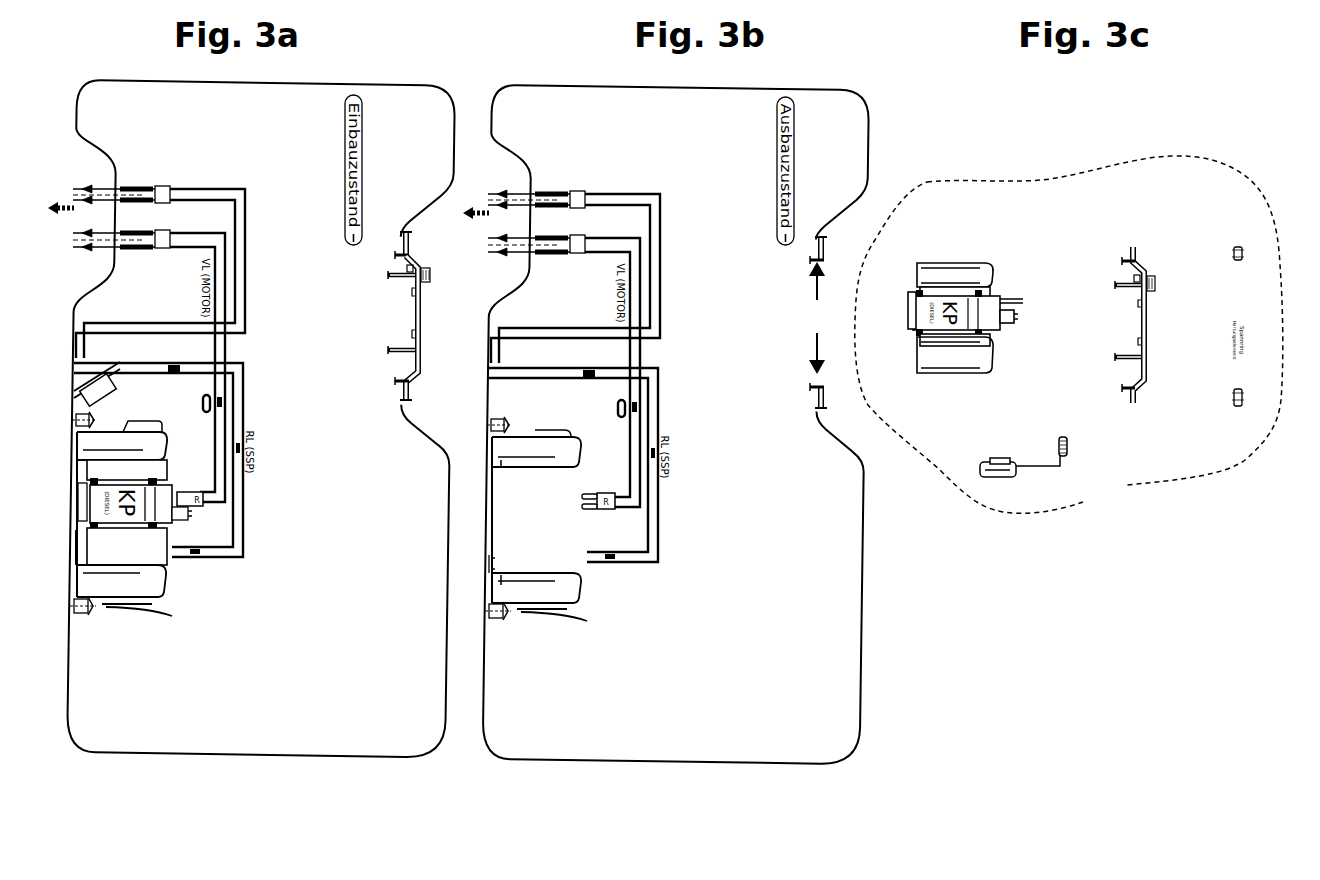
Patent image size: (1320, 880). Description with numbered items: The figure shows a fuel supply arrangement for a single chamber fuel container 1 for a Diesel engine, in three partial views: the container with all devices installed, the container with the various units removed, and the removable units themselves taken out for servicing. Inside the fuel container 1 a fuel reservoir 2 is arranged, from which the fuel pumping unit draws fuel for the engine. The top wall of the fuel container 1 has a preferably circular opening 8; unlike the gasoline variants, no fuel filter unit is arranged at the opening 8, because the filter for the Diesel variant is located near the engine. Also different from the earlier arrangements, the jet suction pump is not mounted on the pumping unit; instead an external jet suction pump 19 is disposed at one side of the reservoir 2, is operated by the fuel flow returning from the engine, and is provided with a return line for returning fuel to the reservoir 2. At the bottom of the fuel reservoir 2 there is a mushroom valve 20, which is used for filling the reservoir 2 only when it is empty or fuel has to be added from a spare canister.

In FIG. 3A, the fuel container 1 is at (248, 753).
In FIG. 3B, the fuel container 1 is at (672, 761).
In FIG. 3A, the fuel reservoir 2 is at (105, 433).
In FIG. 3B, the opening 8 is at (816, 322).
In FIG. 3A, the jet suction pump 19 is at (75, 398).
In FIG. 3A, the mushroom valve 20 is at (73, 547).